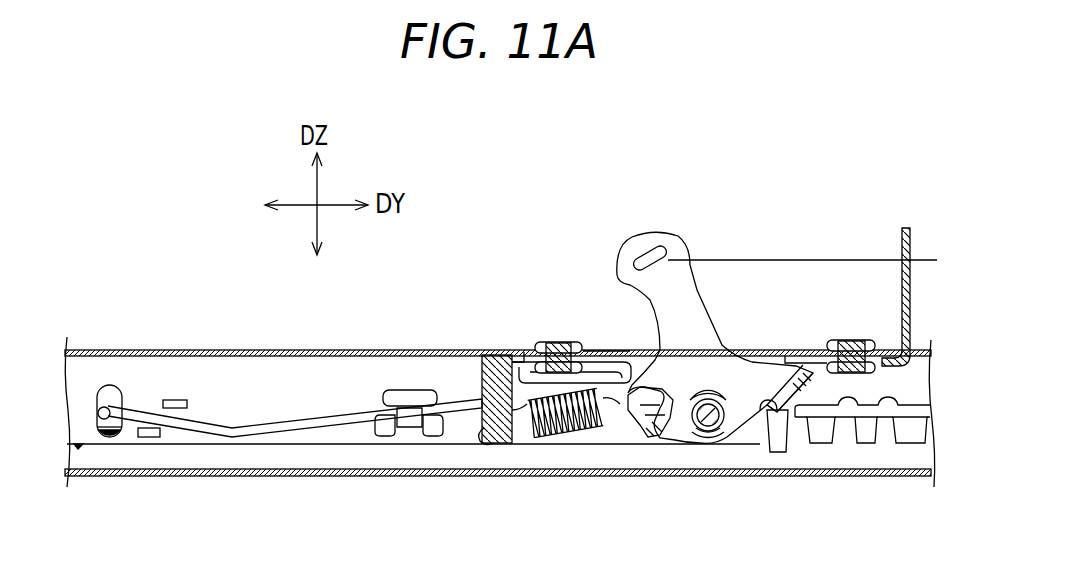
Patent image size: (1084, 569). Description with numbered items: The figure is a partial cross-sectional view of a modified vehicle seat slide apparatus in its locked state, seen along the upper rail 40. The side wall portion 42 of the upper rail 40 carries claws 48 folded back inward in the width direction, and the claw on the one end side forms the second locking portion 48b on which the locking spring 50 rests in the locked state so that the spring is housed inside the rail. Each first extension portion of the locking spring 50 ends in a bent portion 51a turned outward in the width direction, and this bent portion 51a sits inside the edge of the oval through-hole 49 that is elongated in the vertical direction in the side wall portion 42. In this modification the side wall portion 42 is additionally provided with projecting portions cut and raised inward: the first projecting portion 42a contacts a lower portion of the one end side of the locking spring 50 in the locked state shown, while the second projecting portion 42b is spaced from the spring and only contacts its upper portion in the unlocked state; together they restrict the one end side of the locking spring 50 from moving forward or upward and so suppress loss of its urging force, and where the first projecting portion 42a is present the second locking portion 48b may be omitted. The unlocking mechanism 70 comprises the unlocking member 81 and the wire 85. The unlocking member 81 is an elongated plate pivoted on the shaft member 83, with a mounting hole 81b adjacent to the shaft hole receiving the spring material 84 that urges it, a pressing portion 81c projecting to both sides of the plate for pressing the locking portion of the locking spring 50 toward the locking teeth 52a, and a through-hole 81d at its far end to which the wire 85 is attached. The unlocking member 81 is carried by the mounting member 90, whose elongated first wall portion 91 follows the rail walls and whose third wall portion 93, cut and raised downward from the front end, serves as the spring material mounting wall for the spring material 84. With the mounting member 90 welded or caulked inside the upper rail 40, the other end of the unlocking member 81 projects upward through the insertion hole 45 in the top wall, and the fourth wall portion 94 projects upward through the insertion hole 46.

The upper rail 40 is at (270, 350).
The side wall portion 42 is at (358, 360).
The first projecting portion 42a is at (149, 440).
The second projecting portion 42b is at (180, 400).
The insertion hole 45 is at (627, 352).
The insertion hole 46 is at (889, 352).
The claw 48 is at (410, 460).
The second locking portion 48b is at (410, 435).
The through-hole 49 is at (107, 432).
The locking spring 50 is at (457, 400).
The bent portion 51a is at (103, 412).
The lock teeth 52a is at (797, 437).
The unlocking mechanism 70 is at (760, 221).
The unlocking member 81 is at (713, 361).
The mounting hole 81b is at (655, 440).
The pressing portion 81c is at (795, 390).
The through-hole 81d is at (648, 262).
The shaft member 83 is at (712, 437).
The spring material 84 is at (560, 433).
The wire 85 is at (800, 260).
The mounting member 90 is at (580, 343).
The first wall portion 91 is at (606, 348).
The third wall portion 93 is at (507, 447).
The fourth wall portion 94 is at (908, 230).